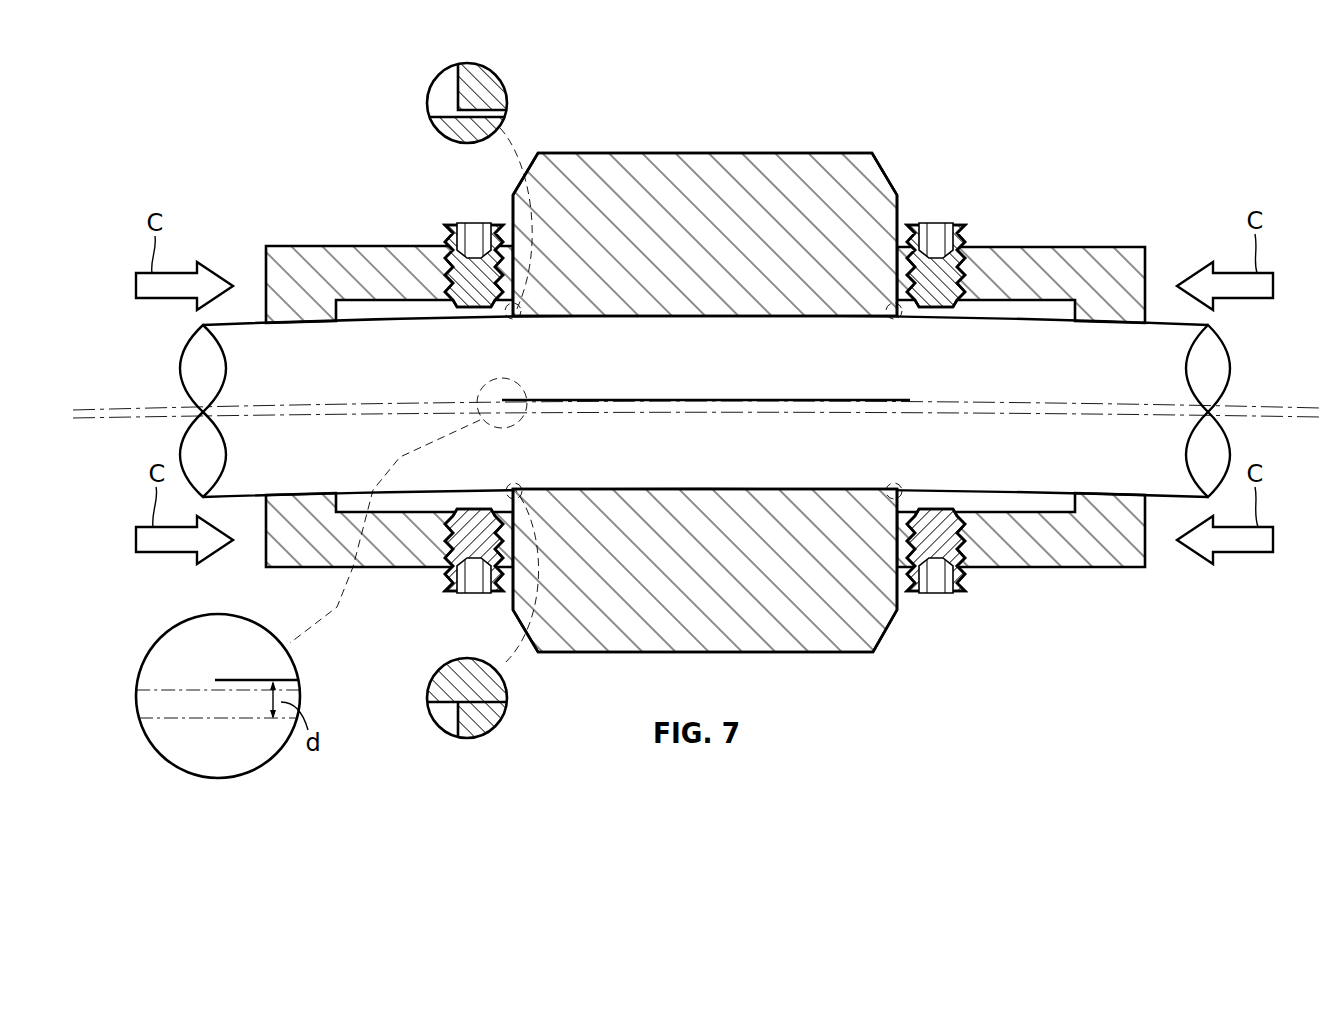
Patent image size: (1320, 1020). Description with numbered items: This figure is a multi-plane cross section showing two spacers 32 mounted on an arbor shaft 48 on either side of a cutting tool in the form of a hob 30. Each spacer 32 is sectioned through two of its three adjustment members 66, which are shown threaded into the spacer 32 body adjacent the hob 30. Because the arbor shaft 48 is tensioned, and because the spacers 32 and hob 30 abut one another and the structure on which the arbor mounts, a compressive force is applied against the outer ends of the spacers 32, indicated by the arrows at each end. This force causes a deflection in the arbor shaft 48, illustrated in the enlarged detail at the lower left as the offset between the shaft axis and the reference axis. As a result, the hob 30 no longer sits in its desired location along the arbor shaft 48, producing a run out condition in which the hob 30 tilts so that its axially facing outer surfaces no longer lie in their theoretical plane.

The hob 30 is at (673, 153).
The spacer 32 is at (314, 246).
The arbor shaft 48 is at (1230, 385).
The adjustment member 66 is at (453, 224).